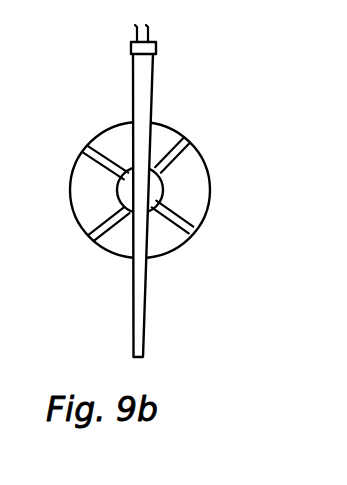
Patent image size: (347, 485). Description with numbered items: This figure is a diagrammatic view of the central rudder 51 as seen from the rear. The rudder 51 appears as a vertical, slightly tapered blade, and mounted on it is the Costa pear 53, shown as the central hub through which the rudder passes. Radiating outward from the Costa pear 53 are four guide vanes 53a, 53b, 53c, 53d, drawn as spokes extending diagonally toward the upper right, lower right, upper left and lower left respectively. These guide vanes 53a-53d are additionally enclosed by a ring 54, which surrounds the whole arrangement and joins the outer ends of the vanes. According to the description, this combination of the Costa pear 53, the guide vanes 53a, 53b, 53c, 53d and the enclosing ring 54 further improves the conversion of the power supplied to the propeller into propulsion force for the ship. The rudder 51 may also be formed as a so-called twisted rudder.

The central rudder 51 is at (143, 306).
The Costa pear 53 is at (165, 187).
The guide vane 53a is at (186, 152).
The guide vane 53b is at (188, 222).
The guide vane 53c is at (89, 144).
The guide vane 53d is at (98, 224).
The ring 54 is at (170, 123).